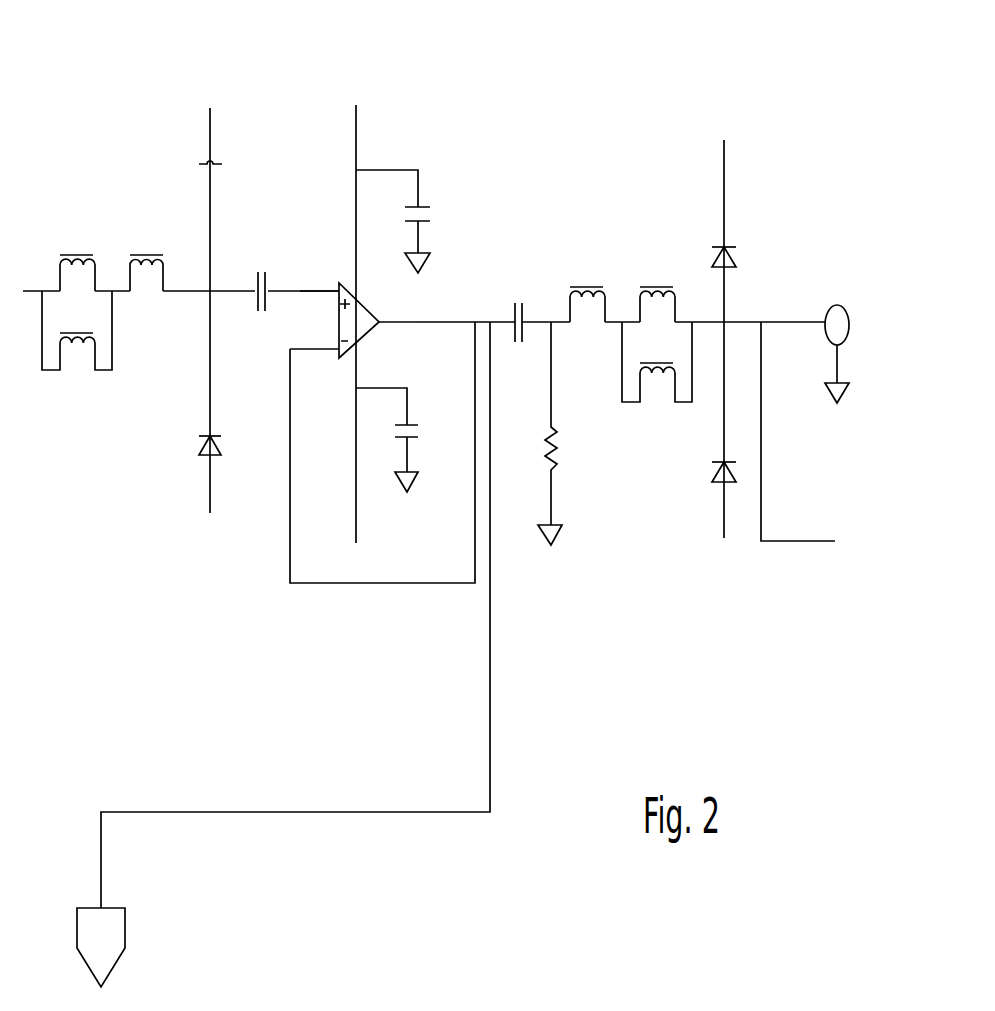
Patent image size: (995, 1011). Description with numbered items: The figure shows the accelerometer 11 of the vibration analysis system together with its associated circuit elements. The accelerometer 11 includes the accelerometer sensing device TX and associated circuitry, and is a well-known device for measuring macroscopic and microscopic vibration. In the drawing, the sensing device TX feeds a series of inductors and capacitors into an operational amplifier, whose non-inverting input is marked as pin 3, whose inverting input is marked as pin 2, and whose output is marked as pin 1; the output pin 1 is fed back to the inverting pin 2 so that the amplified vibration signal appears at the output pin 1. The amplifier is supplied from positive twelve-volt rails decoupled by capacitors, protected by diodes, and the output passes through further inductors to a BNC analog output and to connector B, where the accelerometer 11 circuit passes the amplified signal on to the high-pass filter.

The accelerometer 11 is at (153, 90).
The operational amplifier output pin 1 is at (399, 304).
The operational amplifier inverting input pin 2 is at (314, 331).
The operational amplifier non-inverting input pin 3 is at (319, 272).